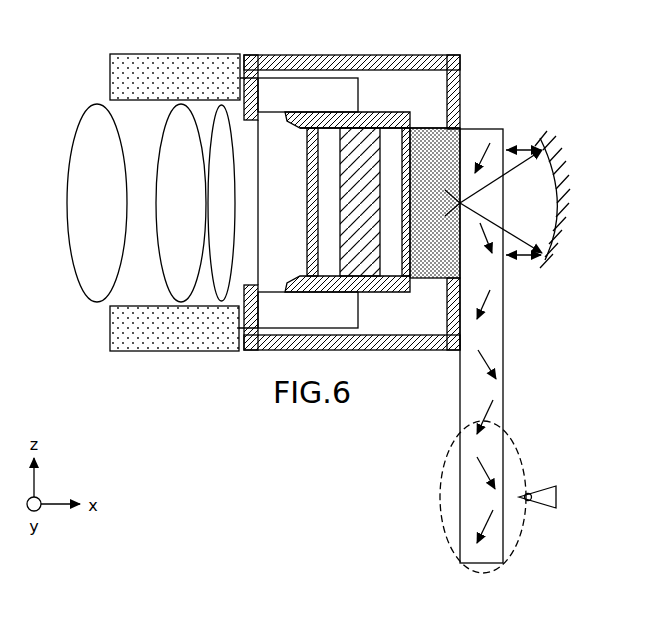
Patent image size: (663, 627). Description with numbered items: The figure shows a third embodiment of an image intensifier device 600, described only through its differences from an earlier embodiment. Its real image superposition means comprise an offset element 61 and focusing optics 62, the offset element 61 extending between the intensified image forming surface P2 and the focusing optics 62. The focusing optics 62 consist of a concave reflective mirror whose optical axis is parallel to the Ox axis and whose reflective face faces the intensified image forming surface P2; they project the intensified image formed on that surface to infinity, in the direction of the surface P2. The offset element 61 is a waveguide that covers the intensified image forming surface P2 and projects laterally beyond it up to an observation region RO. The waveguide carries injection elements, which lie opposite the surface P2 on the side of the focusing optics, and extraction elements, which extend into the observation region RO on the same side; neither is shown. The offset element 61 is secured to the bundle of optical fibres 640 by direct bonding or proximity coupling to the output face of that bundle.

The image intensifier device 600 is at (78, 60).
The intensified image forming surface P2 is at (453, 157).
The offset element 61 is at (485, 129).
The focusing optics 62 is at (557, 146).
The bundle of optical fibres 640 is at (437, 260).
The observation region RO is at (443, 515).